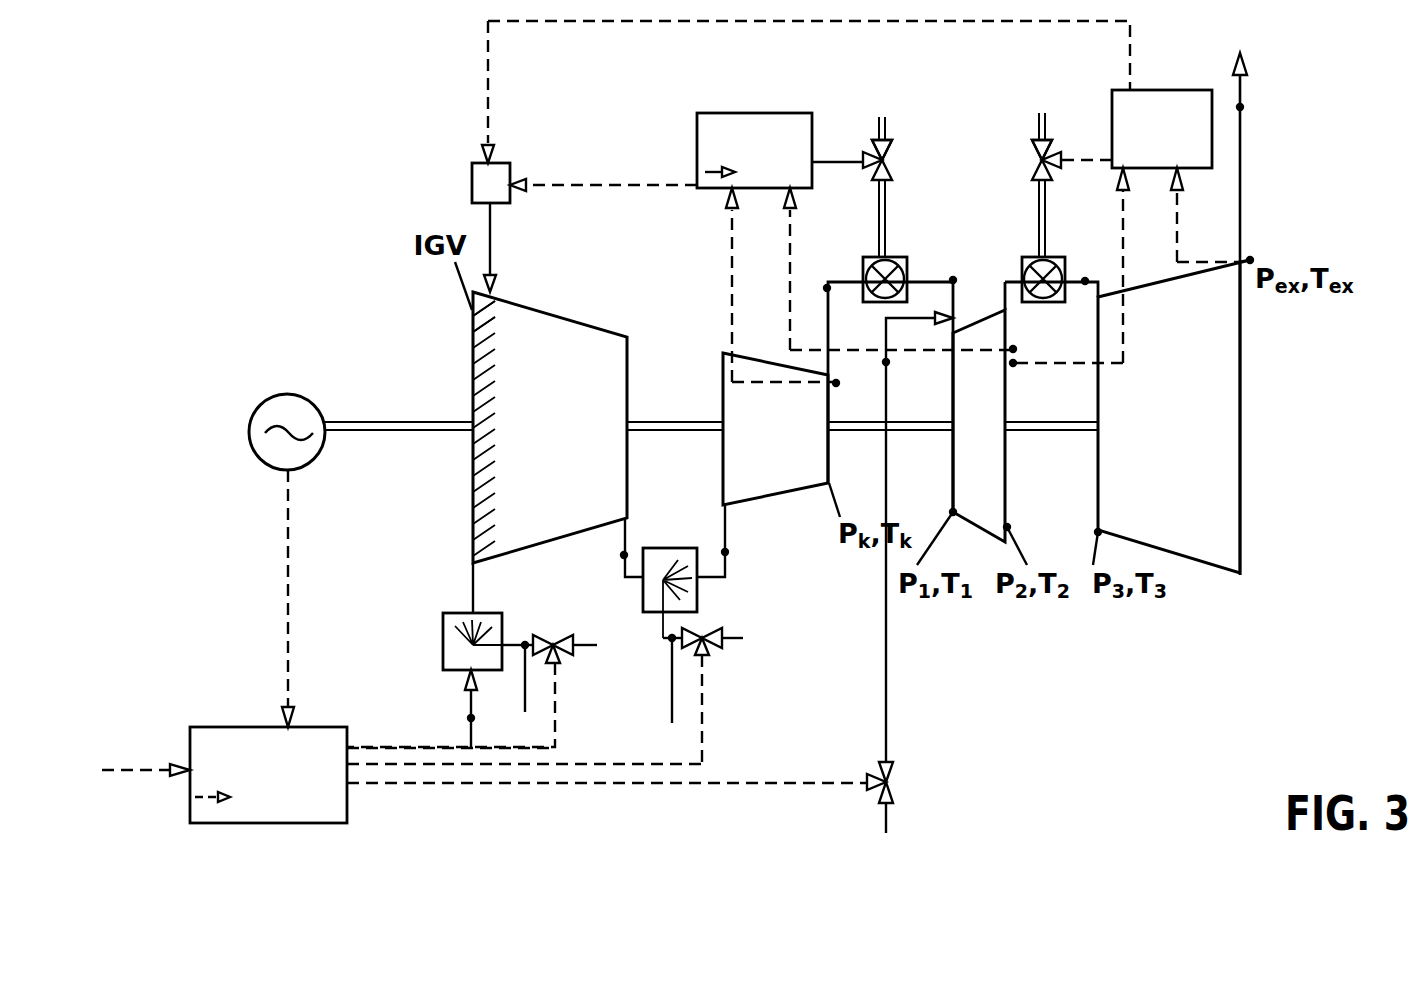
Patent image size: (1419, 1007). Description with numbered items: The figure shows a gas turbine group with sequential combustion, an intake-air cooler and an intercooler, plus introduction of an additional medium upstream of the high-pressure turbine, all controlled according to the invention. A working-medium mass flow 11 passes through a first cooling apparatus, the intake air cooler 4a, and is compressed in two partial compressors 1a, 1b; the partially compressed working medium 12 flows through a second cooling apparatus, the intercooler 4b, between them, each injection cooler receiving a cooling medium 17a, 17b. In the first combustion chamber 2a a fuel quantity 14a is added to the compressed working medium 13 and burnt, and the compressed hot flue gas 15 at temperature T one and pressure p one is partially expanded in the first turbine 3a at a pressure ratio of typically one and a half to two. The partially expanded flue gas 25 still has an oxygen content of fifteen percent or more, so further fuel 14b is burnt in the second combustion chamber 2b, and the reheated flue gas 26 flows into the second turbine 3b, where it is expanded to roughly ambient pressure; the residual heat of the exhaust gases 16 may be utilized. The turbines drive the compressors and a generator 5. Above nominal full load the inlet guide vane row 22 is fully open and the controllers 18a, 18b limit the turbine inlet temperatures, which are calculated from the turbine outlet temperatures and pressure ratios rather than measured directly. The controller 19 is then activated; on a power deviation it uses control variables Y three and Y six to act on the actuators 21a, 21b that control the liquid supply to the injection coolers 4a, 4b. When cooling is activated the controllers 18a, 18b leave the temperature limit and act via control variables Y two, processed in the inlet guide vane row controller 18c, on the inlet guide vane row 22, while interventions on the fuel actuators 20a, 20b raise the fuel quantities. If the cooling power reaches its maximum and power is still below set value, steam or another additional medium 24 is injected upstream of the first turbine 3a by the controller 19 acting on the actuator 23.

The low-pressure partial compressor 1a is at (533, 453).
The high-pressure partial compressor 1b is at (797, 453).
The first combustion chamber 2a is at (895, 257).
The second combustion chamber 2b is at (1055, 257).
The first turbine 3a is at (962, 448).
The second turbine 3b is at (1150, 450).
The intake air cooler 4a is at (493, 612).
The intercooler 4b is at (697, 597).
The generator 5 is at (297, 392).
The working-medium mass flow 11 is at (471, 718).
The partially compressed working medium 12 is at (623, 558).
The compressed working medium 13 is at (827, 288).
The fuel quantity 14a is at (882, 117).
The fuel quantity 14b is at (1042, 113).
The compressed hot flue gas 15 is at (953, 280).
The exhaust gases 16 is at (1240, 107).
The cooling medium 17a is at (523, 694).
The cooling medium 17b is at (673, 700).
The controller 18a is at (770, 113).
The controller 18b is at (1170, 90).
The inlet guide vane row controller 18c is at (512, 163).
The controller 19 is at (347, 813).
The fuel quantity actuator 20a is at (882, 160).
The fuel quantity actuator 20b is at (1042, 160).
The actuator for the cooling power 21a is at (556, 650).
The actuator for the cooling power 21b is at (705, 650).
The inlet guide vane row 22 is at (495, 323).
The actuator for additional medium 23 is at (886, 782).
The additional medium 24 is at (886, 362).
The partially expanded flue gas 25 is at (1013, 280).
The reheated flue gas 26 is at (1085, 282).